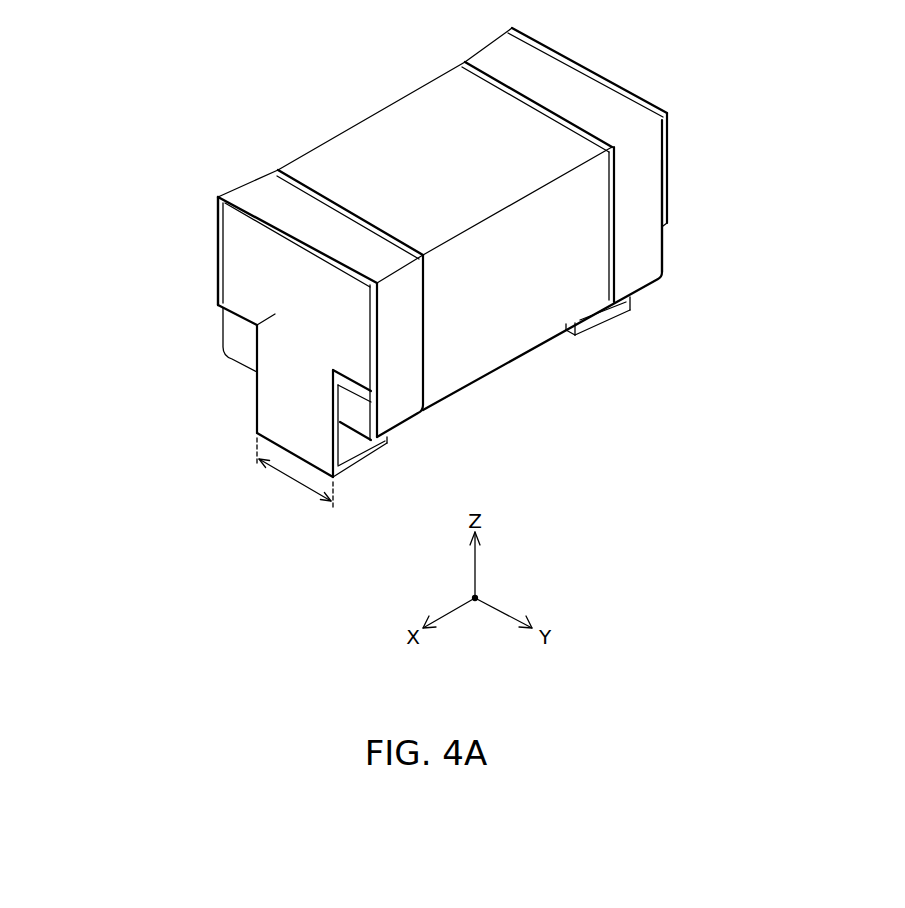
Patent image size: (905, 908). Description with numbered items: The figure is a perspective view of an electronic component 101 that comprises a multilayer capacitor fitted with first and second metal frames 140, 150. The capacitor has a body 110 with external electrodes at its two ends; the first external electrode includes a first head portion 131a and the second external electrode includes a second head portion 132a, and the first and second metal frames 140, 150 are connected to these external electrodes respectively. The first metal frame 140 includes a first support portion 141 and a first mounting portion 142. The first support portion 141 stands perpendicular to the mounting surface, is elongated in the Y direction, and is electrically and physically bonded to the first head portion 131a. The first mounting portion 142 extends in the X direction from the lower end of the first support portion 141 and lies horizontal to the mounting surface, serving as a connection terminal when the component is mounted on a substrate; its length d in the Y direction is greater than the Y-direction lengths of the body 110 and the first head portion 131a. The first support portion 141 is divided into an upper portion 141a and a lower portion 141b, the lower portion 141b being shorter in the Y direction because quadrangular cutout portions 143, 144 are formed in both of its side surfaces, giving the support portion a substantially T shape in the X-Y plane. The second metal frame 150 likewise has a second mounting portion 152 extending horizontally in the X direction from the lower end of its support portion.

The electronic component 101 is at (222, 31).
The body 110 is at (377, 130).
The first head portion 131a is at (363, 410).
The second head portion 132a is at (662, 249).
The first metal frame 140 is at (212, 250).
The first support portion 141 is at (133, 343).
The upper portion of the first support portion 141a is at (255, 303).
The lower portion of the first support portion 141b is at (281, 400).
The first mounting portion 142 is at (352, 445).
The cutout portion 143 is at (266, 325).
The cutout portion 144 is at (338, 386).
The second metal frame 150 is at (672, 175).
The second mounting portion 152 is at (588, 317).